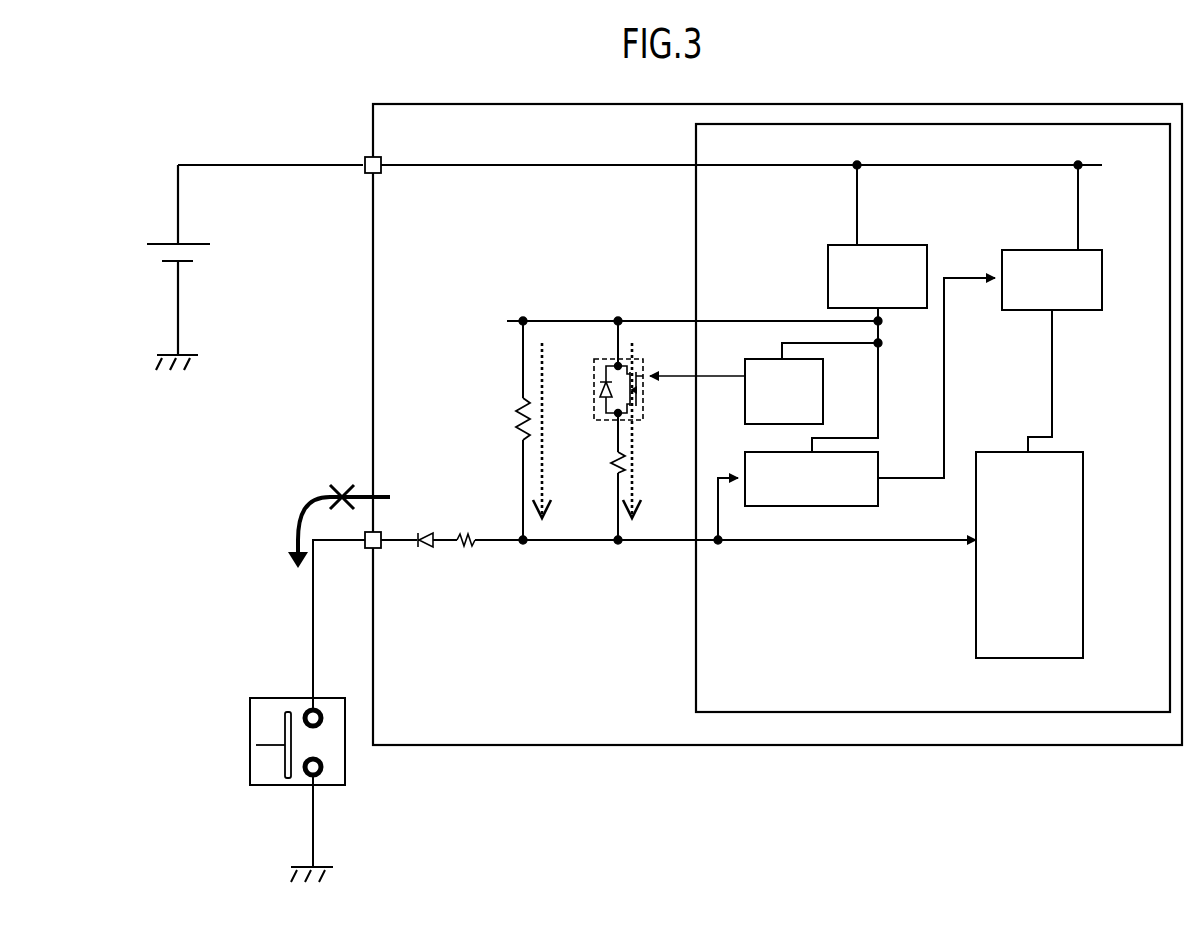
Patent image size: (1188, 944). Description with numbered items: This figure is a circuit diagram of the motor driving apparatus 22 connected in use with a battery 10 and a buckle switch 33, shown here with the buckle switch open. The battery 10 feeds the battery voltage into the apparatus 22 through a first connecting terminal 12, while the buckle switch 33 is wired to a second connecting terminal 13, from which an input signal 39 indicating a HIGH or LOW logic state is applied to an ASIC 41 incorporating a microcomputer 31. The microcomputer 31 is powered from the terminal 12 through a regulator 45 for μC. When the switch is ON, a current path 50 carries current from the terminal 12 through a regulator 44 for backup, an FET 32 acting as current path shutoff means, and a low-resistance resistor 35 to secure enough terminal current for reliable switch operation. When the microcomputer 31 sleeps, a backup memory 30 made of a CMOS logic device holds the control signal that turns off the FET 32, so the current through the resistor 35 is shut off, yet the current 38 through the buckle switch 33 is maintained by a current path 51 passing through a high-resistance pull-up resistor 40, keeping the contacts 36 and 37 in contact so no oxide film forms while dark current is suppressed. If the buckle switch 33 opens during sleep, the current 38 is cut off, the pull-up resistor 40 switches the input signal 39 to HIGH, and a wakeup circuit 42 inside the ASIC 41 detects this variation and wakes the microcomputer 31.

The battery 10 is at (212, 252).
The first connecting terminal 12 is at (381, 173).
The second connecting terminal 13 is at (381, 547).
The motor driving apparatus 22 is at (1122, 745).
The backup memory 30 is at (758, 359).
The microcomputer 31 is at (1083, 557).
The FET 32 is at (594, 360).
The buckle switch 33 is at (270, 786).
The resistor 35 is at (614, 458).
The contact 36 is at (320, 710).
The contact 37 is at (288, 712).
The current 38 is at (322, 498).
The input signal 39 is at (660, 542).
The pull-up resistor 40 is at (520, 405).
The ASIC 41 is at (696, 686).
The wakeup circuit 42 is at (878, 495).
The regulator for backup 44 is at (933, 262).
The regulator for μC 45 is at (1105, 280).
The current path 50 is at (634, 472).
The current path 51 is at (540, 478).